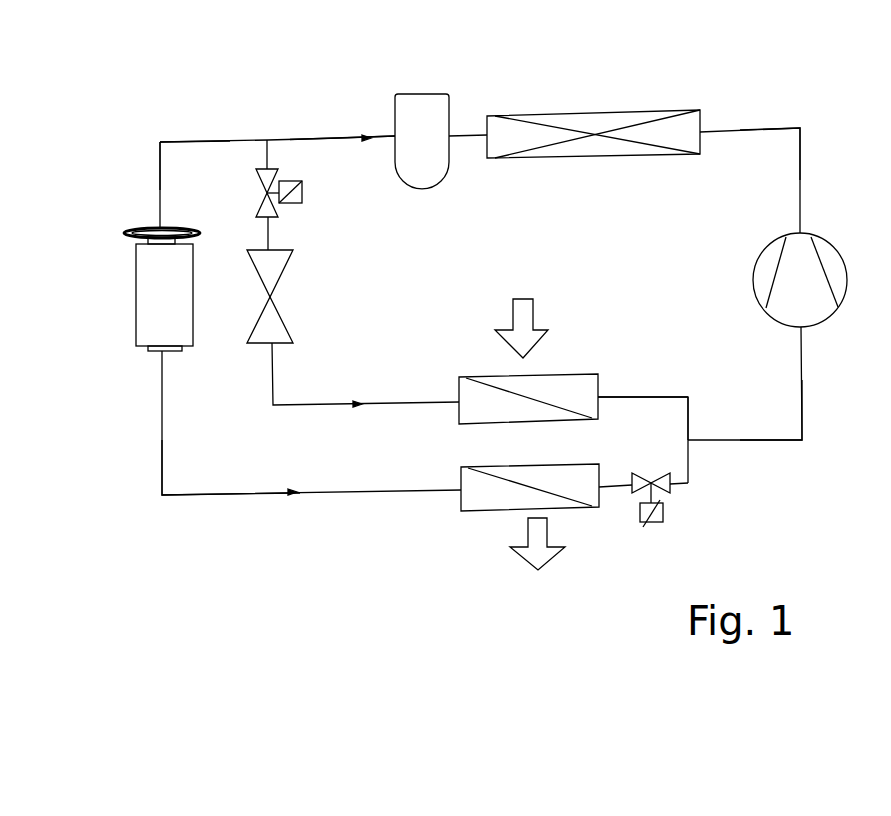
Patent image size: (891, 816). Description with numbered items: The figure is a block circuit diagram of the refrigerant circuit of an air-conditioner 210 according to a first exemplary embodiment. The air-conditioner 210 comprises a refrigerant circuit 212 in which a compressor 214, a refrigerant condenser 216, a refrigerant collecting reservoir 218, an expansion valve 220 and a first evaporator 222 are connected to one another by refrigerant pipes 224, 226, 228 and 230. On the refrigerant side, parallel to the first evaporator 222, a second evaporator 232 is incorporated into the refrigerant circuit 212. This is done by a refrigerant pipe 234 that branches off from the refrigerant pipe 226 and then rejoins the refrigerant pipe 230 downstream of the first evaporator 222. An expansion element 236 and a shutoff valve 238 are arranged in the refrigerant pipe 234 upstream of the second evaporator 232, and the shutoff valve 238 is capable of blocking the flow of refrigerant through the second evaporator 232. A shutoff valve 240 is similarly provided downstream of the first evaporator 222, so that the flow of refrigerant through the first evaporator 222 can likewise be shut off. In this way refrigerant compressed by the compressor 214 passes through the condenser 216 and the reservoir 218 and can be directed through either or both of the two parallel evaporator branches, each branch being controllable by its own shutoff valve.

The air-conditioner 210 is at (203, 100).
The refrigerant circuit 212 is at (340, 139).
The compressor 214 is at (807, 252).
The refrigerant condenser 216 is at (610, 118).
The refrigerant collecting reservoir 218 is at (420, 120).
The expansion valve 220 is at (150, 295).
The evaporator 222 is at (476, 494).
The refrigerant pipe 224 is at (775, 128).
The refrigerant pipe 226 is at (160, 152).
The refrigerant pipe 228 is at (162, 487).
The refrigerant pipe 230 is at (785, 441).
The second evaporator 232 is at (570, 388).
The refrigerant pipe 234 is at (268, 150).
The expansion element 236 is at (273, 324).
The shutoff valve 238 is at (300, 204).
The shutoff valve 240 is at (665, 490).